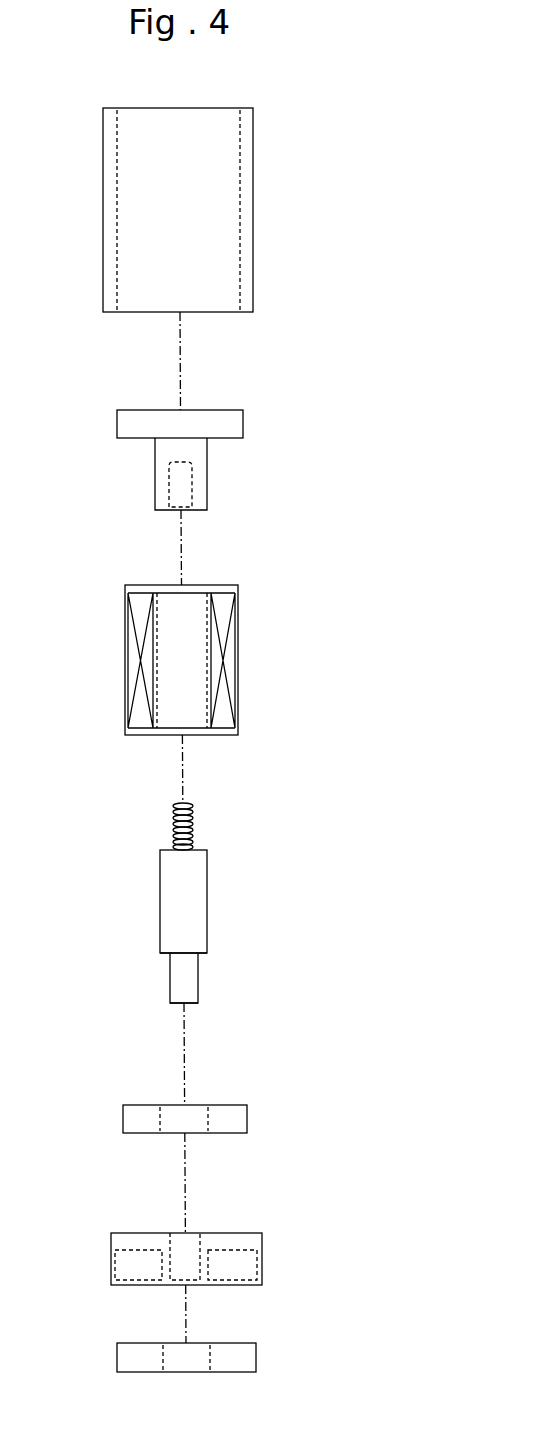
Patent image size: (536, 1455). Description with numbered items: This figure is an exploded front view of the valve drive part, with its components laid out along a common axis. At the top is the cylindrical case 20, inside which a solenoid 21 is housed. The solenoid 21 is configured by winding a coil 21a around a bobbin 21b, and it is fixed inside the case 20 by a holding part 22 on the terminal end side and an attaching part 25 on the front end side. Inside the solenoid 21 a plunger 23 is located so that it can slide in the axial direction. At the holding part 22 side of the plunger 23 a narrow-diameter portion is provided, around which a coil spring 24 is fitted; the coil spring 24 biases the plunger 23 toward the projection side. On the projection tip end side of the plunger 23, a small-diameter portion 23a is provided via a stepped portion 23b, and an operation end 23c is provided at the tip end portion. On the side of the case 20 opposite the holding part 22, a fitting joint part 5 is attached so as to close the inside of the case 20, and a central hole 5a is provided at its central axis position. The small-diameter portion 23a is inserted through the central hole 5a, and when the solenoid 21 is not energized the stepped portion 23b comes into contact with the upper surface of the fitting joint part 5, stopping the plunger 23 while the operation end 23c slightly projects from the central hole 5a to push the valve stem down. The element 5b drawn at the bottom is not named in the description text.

The case 20 is at (253, 208).
The holding part 22 is at (243, 425).
The solenoid 21 is at (255, 634).
The coil 21a is at (230, 687).
The bobbin 21b is at (228, 583).
The coil spring 24 is at (193, 823).
The plunger 23 is at (207, 903).
The small-diameter portion 23a is at (198, 982).
The stepped portion 23b is at (205, 955).
The operation end 23c is at (193, 1005).
The attaching part 25 is at (247, 1118).
The fitting joint part 5 is at (246, 1229).
The central hole 5a is at (187, 1230).
The gear 5b is at (256, 1357).